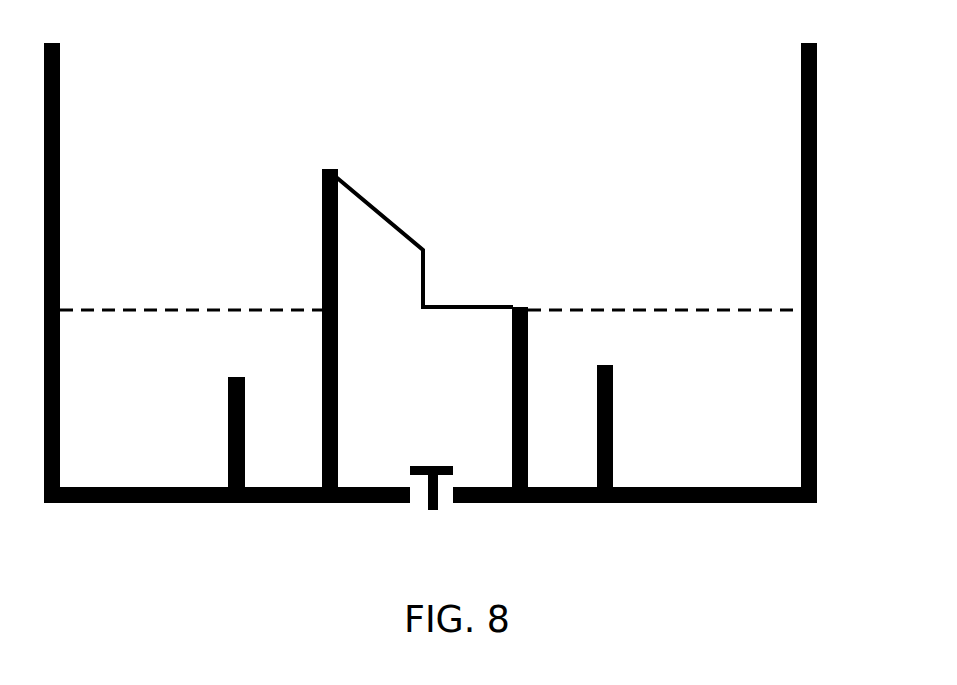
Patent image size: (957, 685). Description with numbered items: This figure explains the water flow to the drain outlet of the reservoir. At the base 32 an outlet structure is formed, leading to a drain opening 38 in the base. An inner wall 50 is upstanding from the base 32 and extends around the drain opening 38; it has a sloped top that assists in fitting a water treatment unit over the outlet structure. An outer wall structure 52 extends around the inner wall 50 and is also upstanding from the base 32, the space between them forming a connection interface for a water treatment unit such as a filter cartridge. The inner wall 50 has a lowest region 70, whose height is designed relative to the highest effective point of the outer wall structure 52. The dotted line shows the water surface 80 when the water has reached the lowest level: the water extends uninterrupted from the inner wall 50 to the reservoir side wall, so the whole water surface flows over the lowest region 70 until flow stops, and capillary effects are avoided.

The base 32 is at (146, 487).
The drain opening 38 is at (420, 465).
The inner wall 50 is at (322, 196).
The outer wall structure 52 is at (228, 409).
The lowest region 70 is at (495, 309).
The water surface 80 is at (685, 311).